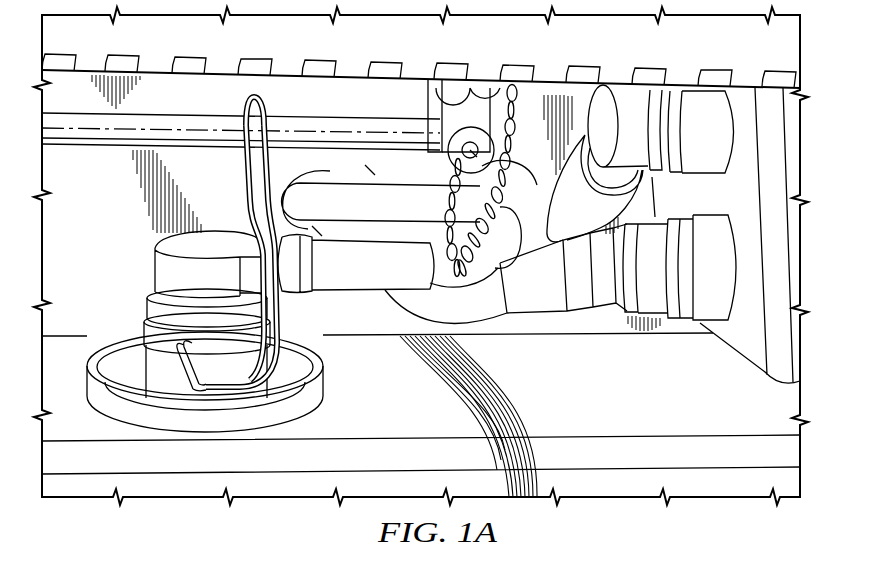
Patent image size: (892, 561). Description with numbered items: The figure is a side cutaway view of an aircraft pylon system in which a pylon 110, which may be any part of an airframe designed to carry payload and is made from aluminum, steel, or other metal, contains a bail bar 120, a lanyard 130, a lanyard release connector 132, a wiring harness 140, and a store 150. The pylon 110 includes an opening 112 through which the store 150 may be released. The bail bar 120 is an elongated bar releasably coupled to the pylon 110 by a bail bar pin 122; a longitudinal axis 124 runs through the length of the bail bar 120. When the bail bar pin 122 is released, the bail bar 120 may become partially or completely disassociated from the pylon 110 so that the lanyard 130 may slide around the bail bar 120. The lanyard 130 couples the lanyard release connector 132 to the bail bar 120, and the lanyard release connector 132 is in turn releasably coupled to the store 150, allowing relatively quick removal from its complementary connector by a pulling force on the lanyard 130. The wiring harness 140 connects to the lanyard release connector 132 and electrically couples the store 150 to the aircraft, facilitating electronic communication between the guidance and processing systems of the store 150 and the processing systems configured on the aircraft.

The pylon 110 is at (502, 51).
The opening 112 is at (290, 368).
The bail bar 120 is at (366, 118).
The bail bar pin 122 is at (486, 168).
The longitudinal axis 124 is at (120, 146).
The lanyard 130 is at (290, 298).
The lanyard release connector 132 is at (147, 312).
The wiring harness 140 is at (367, 278).
The store 150 is at (158, 372).